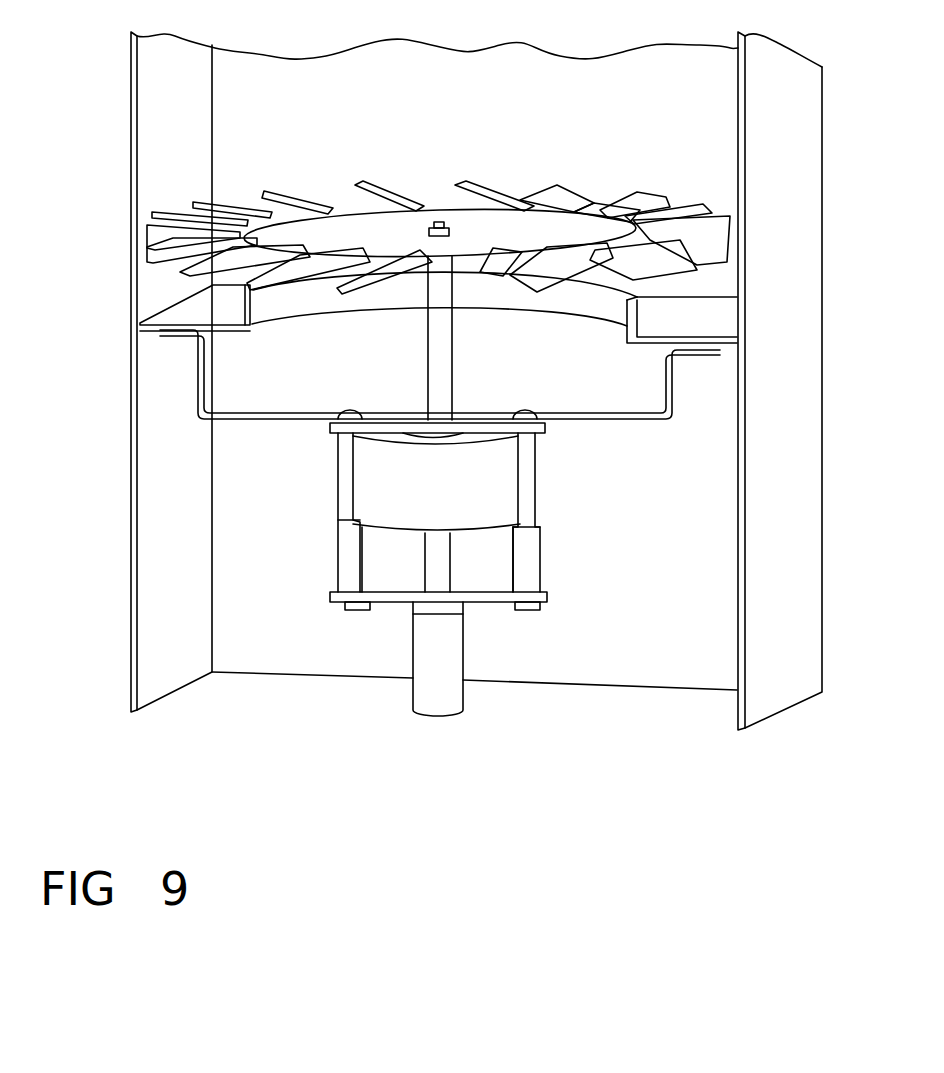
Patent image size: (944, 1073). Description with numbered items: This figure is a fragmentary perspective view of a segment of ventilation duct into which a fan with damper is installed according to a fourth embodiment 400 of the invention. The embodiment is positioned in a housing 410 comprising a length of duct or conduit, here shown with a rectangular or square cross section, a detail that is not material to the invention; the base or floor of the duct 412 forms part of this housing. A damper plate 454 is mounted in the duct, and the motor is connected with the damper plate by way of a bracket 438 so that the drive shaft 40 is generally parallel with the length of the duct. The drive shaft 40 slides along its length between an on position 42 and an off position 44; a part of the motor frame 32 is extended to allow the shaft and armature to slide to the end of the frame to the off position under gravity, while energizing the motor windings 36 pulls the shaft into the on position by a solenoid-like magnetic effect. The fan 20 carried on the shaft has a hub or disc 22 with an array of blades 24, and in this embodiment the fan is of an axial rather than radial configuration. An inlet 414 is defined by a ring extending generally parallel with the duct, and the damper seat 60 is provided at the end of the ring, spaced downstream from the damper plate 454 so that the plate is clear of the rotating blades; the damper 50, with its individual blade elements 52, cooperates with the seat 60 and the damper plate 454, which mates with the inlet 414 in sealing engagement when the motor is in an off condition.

The fan 20 is at (492, 138).
The rotor disc 22 is at (367, 218).
The blades 24 is at (244, 197).
The motor frame 32 is at (345, 538).
The motor windings 36 is at (367, 486).
The drive shaft 40 is at (440, 332).
The on position 42 is at (503, 481).
The off position 44 is at (503, 560).
The damper 50 is at (516, 222).
The blade 52 is at (598, 218).
The damper seat 60 is at (628, 300).
The fourth embodiment 400 is at (200, 778).
The housing 410 is at (773, 688).
The base 412 is at (677, 656).
The inlet 414 is at (356, 298).
The bracket 438 is at (245, 413).
The damper plate 454 is at (220, 312).